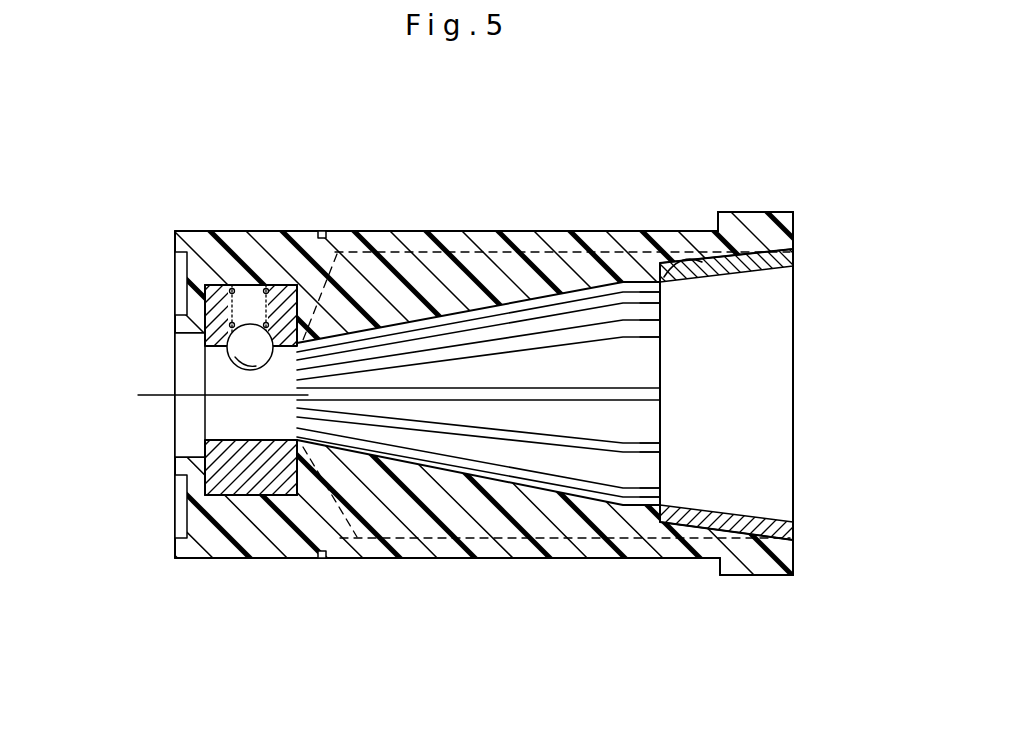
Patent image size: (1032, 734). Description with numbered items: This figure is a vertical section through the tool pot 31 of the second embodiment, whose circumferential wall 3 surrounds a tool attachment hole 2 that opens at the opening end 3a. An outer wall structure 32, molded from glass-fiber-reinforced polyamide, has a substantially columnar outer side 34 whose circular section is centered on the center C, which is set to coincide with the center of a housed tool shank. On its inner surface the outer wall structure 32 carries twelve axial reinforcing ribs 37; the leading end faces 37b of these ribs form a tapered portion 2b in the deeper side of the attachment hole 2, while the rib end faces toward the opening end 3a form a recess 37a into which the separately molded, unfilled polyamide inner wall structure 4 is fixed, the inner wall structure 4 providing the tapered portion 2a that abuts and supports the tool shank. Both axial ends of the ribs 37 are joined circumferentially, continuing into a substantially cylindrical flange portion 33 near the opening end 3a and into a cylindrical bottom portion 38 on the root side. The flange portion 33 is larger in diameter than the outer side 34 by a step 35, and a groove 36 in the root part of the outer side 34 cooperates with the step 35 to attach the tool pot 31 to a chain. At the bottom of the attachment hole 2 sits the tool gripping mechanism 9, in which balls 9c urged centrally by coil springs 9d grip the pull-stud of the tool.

The tool attachment hole 2 is at (766, 428).
The tapered portion 2a is at (785, 490).
The tapered portion 2b is at (605, 390).
The circumferential wall 3 is at (531, 566).
The opening end 3a is at (785, 371).
The inner wall structure 4 is at (795, 248).
The tool gripping mechanism 9 is at (195, 442).
The balls 9c is at (244, 335).
The coil springs 9d is at (229, 285).
The tool pot 31 is at (160, 208).
The outer wall structure 32 is at (527, 240).
The flange portion 33 is at (750, 222).
The outer side 34 is at (476, 230).
The step 35 is at (716, 215).
The groove 36 is at (322, 229).
The reinforcing ribs 37 is at (412, 265).
The recess 37a is at (684, 250).
The leading end faces 37b is at (650, 394).
The cylindrical bottom portion 38 is at (265, 540).
The center C is at (209, 393).